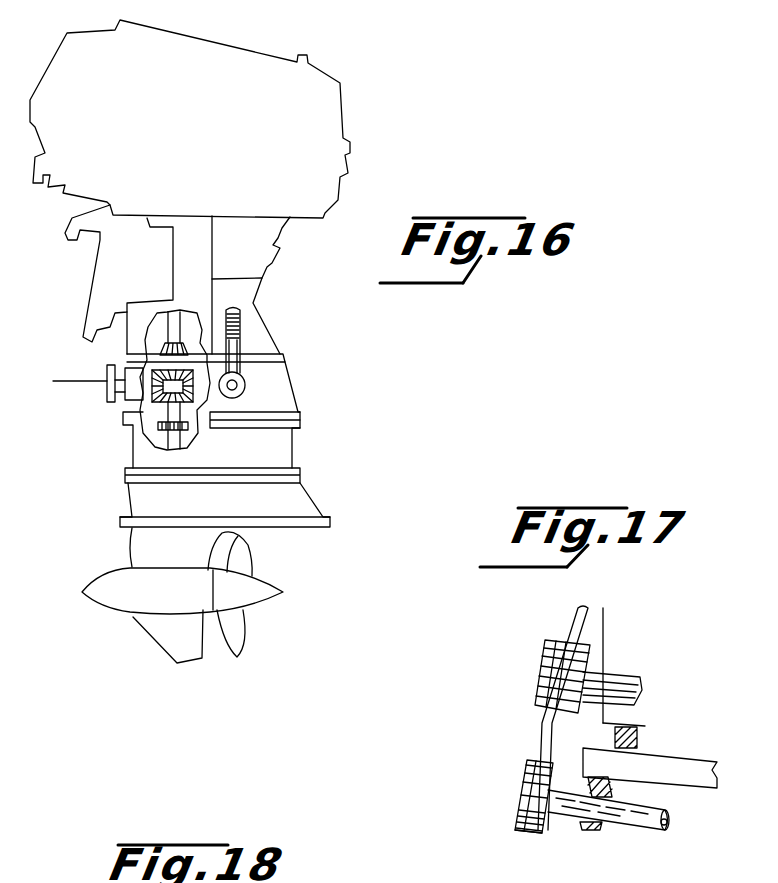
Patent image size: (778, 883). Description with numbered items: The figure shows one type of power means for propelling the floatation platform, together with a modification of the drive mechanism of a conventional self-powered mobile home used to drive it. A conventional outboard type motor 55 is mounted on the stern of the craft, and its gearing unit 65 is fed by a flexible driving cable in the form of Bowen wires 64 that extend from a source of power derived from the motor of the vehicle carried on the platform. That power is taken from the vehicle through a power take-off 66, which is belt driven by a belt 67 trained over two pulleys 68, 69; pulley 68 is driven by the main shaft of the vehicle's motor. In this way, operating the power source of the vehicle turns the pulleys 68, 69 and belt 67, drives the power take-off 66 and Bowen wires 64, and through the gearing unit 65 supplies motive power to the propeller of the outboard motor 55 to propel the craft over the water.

In FIG. 16, the outboard type motor 55 is at (340, 83).
In FIG. 16, the Bowen wires 64 is at (80, 383).
In FIG. 17, the Bowen wires 64 is at (648, 818).
In FIG. 16, the gearing unit 65 is at (210, 400).
In FIG. 17, the power take-off 66 is at (515, 822).
In FIG. 17, the belt 67 is at (542, 721).
In FIG. 17, the pulley 68 is at (545, 641).
In FIG. 17, the pulley 69 is at (522, 778).